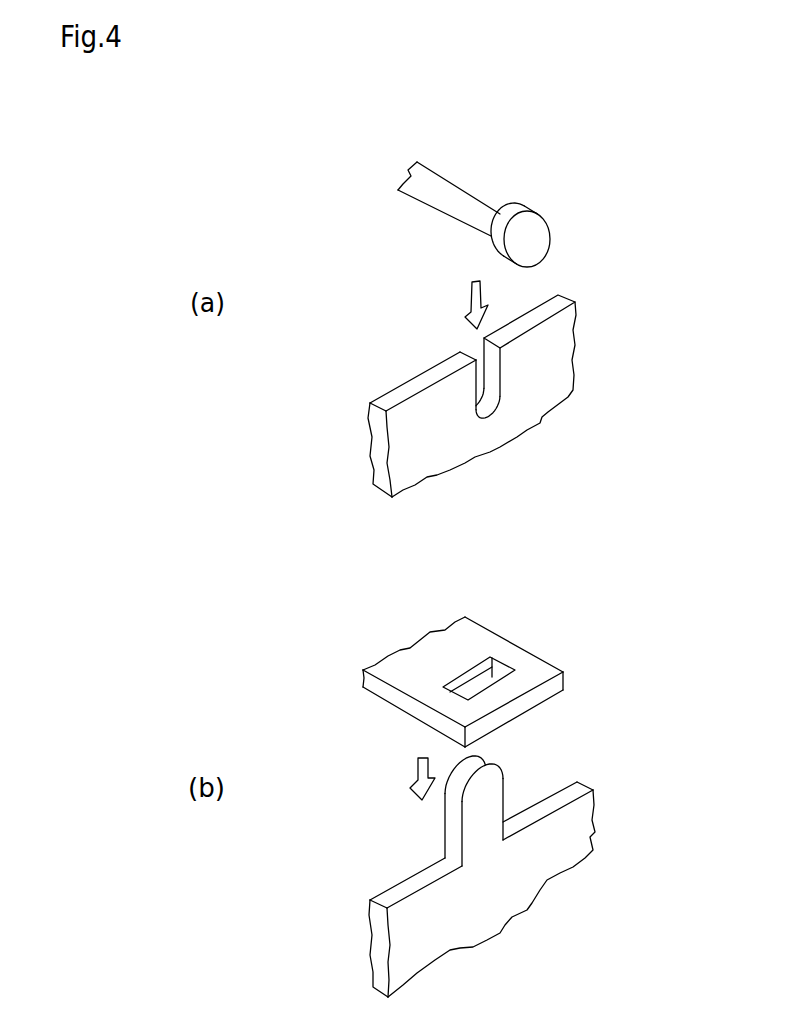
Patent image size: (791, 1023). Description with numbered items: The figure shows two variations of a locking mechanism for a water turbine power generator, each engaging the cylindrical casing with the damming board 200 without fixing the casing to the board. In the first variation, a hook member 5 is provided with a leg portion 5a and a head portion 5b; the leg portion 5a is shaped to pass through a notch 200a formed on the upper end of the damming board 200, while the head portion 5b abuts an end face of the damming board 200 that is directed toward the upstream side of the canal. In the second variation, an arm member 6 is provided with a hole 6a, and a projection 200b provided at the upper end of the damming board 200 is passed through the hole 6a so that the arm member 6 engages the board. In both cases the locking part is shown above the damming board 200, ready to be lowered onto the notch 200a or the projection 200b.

The hook member 5 is at (509, 197).
The leg portion 5a is at (450, 202).
The head portion 5b is at (533, 243).
The damming board 200 is at (527, 646).
The notch 200a is at (473, 385).
The projection 200b is at (490, 807).
The arm member 6 is at (462, 679).
The hole 6a is at (483, 670).